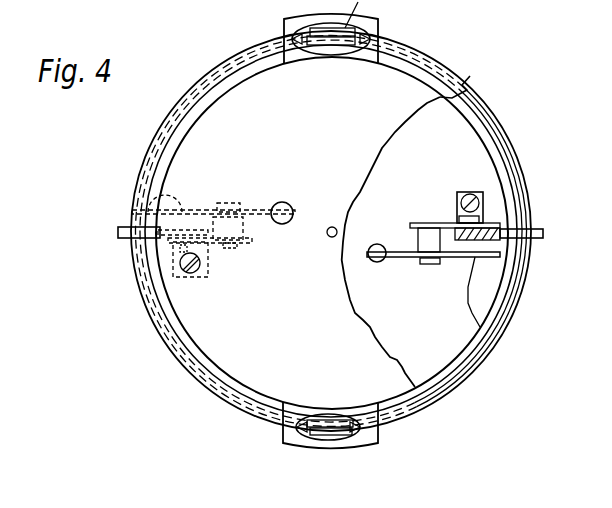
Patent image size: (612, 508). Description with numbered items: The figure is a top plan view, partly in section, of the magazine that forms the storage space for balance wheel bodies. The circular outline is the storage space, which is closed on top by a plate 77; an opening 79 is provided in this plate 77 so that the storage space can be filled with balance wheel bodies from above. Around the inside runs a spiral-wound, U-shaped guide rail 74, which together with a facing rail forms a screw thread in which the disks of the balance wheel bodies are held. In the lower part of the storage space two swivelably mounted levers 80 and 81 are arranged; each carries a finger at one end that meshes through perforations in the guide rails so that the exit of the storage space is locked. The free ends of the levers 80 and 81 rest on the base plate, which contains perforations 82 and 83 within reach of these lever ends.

The guide rail 74 is at (516, 294).
The plate 77 is at (183, 172).
The opening 79 is at (337, 435).
The lever 80 is at (136, 212).
The lever 81 is at (480, 324).
The perforation 82 is at (286, 204).
The perforation 83 is at (378, 263).